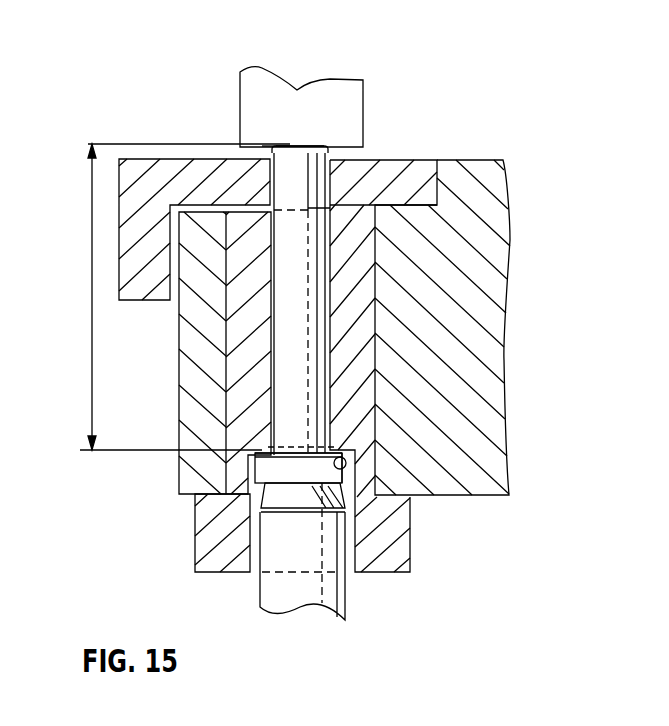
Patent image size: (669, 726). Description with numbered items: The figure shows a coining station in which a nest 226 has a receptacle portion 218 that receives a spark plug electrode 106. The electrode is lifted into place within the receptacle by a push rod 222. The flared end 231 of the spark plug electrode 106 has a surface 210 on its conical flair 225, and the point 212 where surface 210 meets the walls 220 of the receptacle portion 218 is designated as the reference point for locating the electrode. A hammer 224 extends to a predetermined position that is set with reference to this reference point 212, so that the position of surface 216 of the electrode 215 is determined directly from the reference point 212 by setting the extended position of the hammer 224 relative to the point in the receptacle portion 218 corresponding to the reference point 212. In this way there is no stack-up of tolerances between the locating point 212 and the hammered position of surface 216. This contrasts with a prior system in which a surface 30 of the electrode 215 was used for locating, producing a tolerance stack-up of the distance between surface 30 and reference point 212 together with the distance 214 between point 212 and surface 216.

The surface 30 is at (293, 147).
The spark plug electrode 106 is at (262, 421).
The surface 210 is at (285, 448).
The reference point 212 is at (340, 455).
The distance 214 is at (92, 313).
The electrode 215 is at (262, 146).
The surface 216 is at (305, 148).
The receptacle portion 218 is at (412, 538).
The walls 220 is at (347, 466).
The push rod 222 is at (340, 600).
The hammer 224 is at (353, 108).
The conical flair 225 is at (340, 452).
The nest 226 is at (484, 158).
The flared end 231 is at (290, 472).